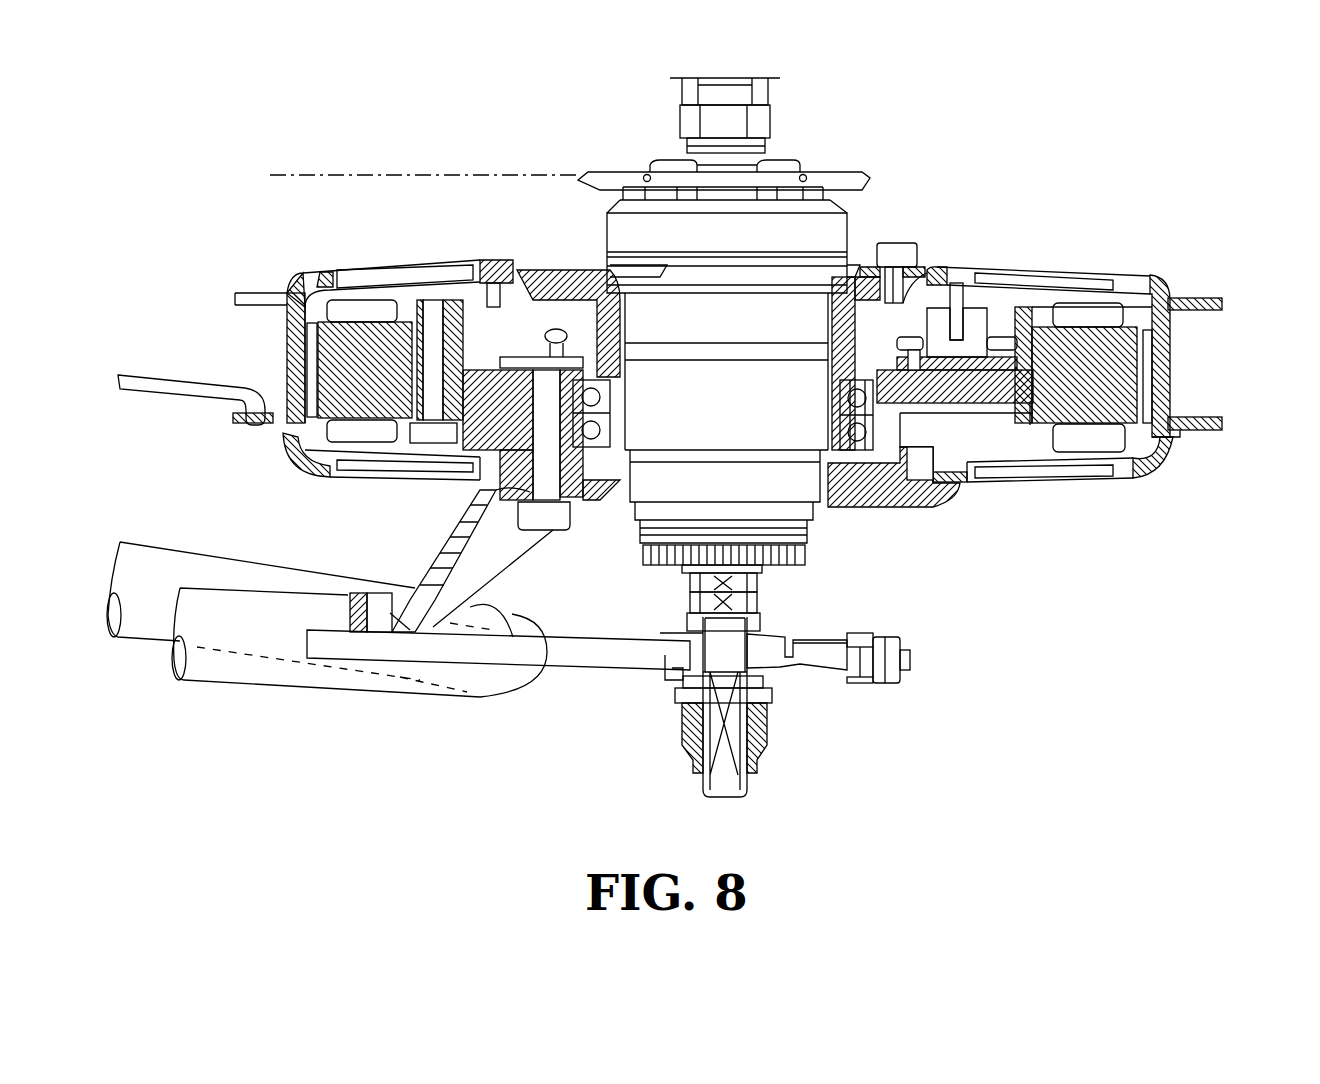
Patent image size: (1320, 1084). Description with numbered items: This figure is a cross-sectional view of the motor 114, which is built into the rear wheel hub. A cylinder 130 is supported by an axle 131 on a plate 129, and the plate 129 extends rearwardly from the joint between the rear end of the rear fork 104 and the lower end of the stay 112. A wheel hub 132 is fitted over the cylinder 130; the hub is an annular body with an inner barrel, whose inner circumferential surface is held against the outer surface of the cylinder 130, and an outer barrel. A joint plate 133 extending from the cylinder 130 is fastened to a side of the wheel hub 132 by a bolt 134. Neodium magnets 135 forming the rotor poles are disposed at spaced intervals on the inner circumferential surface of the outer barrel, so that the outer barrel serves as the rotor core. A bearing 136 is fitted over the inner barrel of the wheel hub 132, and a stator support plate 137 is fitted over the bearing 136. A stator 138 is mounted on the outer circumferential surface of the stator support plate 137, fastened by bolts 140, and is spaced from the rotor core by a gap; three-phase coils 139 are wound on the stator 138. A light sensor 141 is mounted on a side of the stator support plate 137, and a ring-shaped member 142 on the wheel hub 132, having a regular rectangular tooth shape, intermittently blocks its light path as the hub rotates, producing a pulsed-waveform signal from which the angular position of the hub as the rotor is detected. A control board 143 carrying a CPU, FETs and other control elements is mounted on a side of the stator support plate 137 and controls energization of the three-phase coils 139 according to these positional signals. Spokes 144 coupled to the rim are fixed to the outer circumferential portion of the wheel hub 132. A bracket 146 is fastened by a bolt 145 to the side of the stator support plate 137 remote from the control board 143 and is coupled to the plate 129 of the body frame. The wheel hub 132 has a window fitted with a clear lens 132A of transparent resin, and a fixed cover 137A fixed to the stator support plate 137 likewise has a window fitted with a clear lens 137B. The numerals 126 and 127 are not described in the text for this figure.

The rear fork 104 is at (248, 555).
The stay 112 is at (228, 690).
The motor 114 is at (1103, 515).
The flange disc 126 is at (840, 175).
The center axis 127 is at (400, 143).
The plate 129 is at (600, 670).
The cylinder 130 is at (795, 490).
The axle 131 is at (690, 585).
The wheel hub 132 is at (940, 265).
The clear lens 132A is at (1100, 272).
The joint plate 133 is at (855, 265).
The bolt 134 is at (900, 240).
The neodium magnets 135 is at (1173, 345).
The bearing 136 is at (905, 485).
The stator support plate 137 is at (910, 415).
The fixed cover 137A is at (965, 490).
The clear lens 137B is at (1045, 483).
The stator 138 is at (1152, 288).
The three-phase coils 139 is at (1058, 437).
The bolts 140 is at (412, 443).
The light sensor 141 is at (1023, 288).
The ring-shaped member 142 is at (1002, 290).
The control board 143 is at (510, 300).
The spokes 144 is at (150, 377).
The bolt 145 is at (545, 518).
The bracket 146 is at (487, 567).